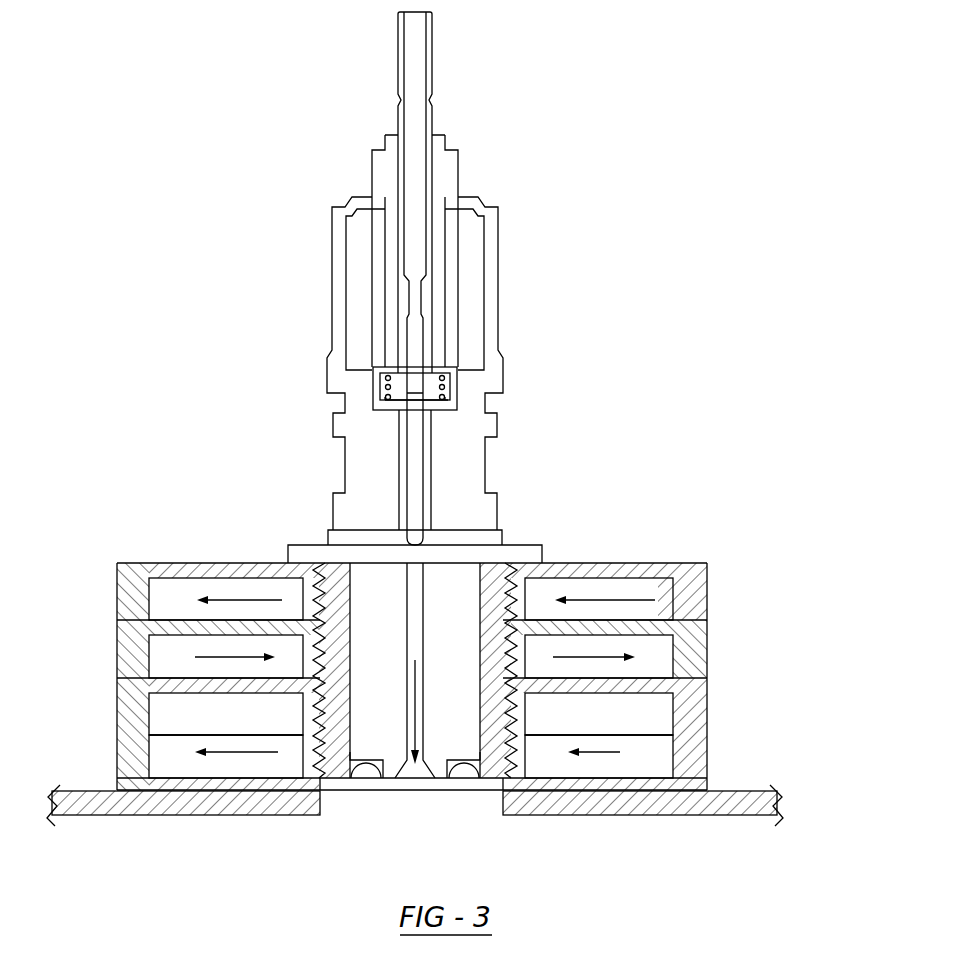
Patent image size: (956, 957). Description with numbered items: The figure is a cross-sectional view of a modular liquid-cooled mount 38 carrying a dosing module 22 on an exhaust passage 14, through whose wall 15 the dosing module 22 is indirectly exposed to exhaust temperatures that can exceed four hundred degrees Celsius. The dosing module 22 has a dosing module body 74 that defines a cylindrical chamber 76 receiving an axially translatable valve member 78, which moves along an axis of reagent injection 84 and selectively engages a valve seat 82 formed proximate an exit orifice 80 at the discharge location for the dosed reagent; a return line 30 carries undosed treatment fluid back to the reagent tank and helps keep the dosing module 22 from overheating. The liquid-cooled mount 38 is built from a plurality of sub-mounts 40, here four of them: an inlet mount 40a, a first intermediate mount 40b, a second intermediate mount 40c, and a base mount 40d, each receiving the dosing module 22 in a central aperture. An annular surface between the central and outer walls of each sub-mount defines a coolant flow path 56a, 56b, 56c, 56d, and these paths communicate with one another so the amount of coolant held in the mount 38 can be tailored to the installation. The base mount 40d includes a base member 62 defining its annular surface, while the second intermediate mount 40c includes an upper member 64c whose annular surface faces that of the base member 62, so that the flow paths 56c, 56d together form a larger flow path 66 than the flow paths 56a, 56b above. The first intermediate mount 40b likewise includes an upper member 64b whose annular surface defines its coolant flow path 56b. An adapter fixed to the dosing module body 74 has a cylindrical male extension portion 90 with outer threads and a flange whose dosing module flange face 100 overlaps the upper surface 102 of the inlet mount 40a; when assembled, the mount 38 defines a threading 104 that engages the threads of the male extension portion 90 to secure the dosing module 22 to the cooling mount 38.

The dosing module 22 is at (412, 442).
The return line 30 is at (491, 202).
The axis of reagent injection 84 is at (417, 332).
The dosing module body 74 is at (467, 387).
The cylindrical chamber 76 is at (398, 448).
The valve member 78 is at (413, 467).
The valve seat 82 is at (423, 587).
The cylindrical male extension portion 90 is at (335, 592).
The dosing module flange face 100 is at (412, 615).
The exit orifice 80 is at (414, 778).
The threading 104 is at (347, 762).
The liquid-cooled mount 38 is at (422, 624).
The upper surface 102 is at (222, 563).
The inlet mount 40a is at (422, 551).
The first intermediate mount 40b is at (422, 746).
The second intermediate mount 40c is at (422, 775).
The base mount 40d is at (476, 801).
The sub-mounts 40 is at (704, 801).
The coolant flow path 56a is at (163, 600).
The coolant flow path 56b is at (170, 657).
The coolant flow path 56c is at (172, 712).
The coolant flow path 56d is at (256, 762).
The upper member 64b is at (533, 618).
The upper member 64c is at (636, 690).
The larger flow path 66 is at (527, 760).
The base member 62 is at (178, 795).
The exhaust passage 14 is at (402, 783).
The wall 15 is at (80, 792).